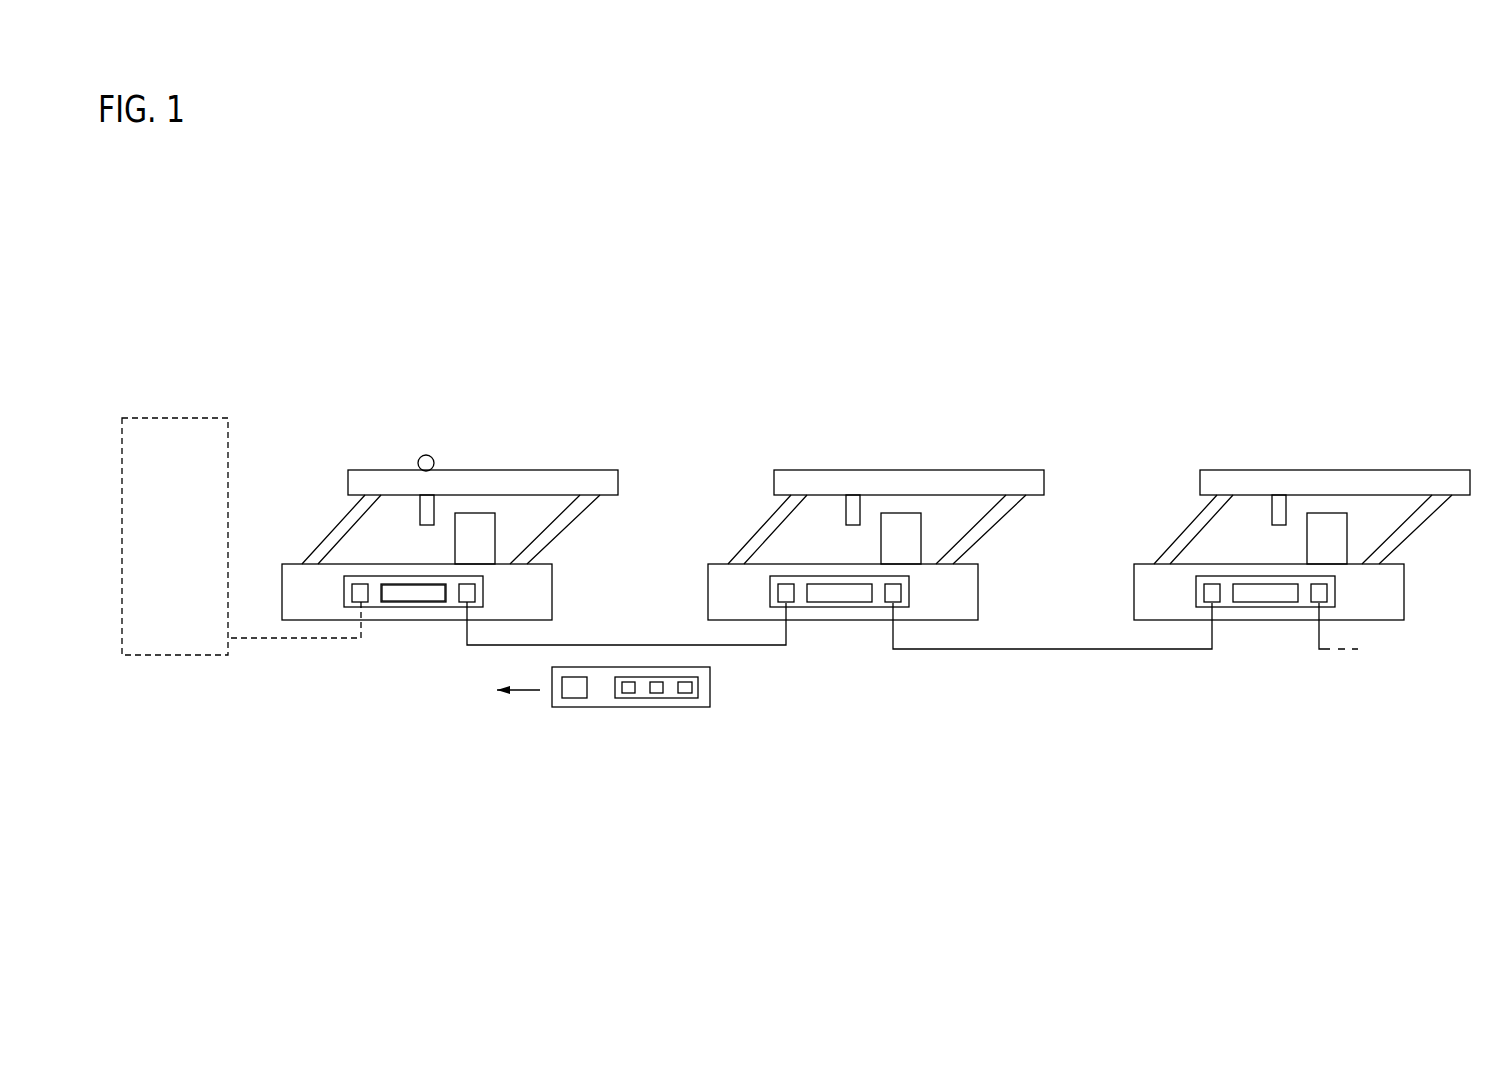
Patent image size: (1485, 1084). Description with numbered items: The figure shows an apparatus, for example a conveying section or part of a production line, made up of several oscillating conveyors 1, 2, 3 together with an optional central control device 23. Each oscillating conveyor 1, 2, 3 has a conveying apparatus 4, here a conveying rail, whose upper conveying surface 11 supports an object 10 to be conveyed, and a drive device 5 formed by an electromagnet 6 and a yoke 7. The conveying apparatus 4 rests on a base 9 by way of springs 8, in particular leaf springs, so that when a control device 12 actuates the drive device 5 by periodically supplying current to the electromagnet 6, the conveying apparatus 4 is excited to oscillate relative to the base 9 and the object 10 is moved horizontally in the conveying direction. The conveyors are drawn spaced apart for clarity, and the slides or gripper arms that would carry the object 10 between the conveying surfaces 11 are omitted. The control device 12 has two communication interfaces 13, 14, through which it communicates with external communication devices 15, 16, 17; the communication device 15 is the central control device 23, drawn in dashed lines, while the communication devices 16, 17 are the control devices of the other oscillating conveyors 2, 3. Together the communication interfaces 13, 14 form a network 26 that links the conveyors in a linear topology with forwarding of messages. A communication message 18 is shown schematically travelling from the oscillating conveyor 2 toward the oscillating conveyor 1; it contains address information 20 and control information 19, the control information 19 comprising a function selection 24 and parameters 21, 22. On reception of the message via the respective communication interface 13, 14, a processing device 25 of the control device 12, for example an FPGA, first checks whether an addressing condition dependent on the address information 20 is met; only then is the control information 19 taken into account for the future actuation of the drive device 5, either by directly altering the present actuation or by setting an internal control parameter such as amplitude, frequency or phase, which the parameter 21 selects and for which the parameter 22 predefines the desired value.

The oscillating conveyor 1 is at (459, 551).
The oscillating conveyor 2 is at (876, 547).
The oscillating conveyor 3 is at (1302, 554).
The conveying apparatus 4 is at (607, 486).
The drive device 5 is at (442, 517).
The electromagnet 6 is at (495, 535).
The yoke 7 is at (425, 513).
The springs 8 is at (557, 532).
The base 9 is at (553, 598).
The object 10 is at (430, 456).
The conveying surface 11 is at (390, 462).
The control device 12 is at (455, 607).
The communication interface 13 is at (352, 592).
The communication interface 14 is at (476, 592).
The external communication device 15 is at (253, 480).
The communication device 16 is at (860, 610).
The communication device 17 is at (1278, 610).
The communication message 18 is at (653, 707).
The control information 19 is at (653, 678).
The address information 20 is at (572, 698).
The parameter 21 is at (661, 693).
The parameter 22 is at (628, 689).
The central control device 23 is at (210, 435).
The function selection 24 is at (627, 693).
The processing device 25 is at (413, 605).
The network 26 is at (932, 668).